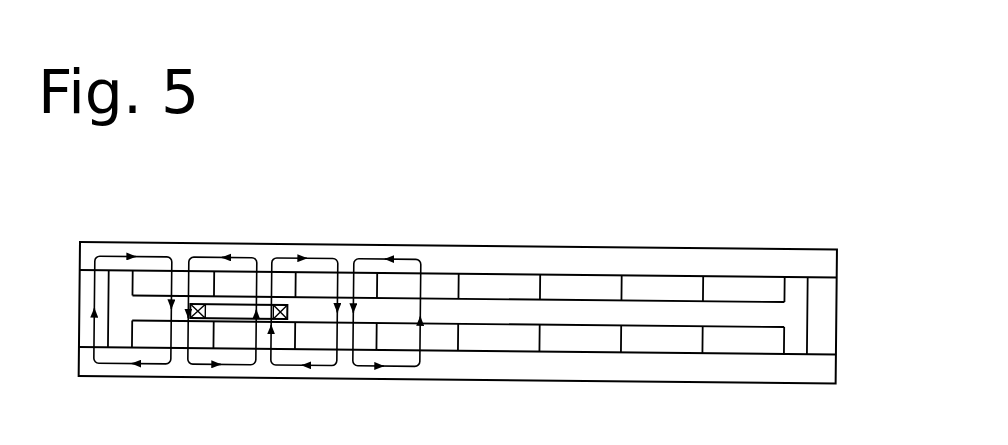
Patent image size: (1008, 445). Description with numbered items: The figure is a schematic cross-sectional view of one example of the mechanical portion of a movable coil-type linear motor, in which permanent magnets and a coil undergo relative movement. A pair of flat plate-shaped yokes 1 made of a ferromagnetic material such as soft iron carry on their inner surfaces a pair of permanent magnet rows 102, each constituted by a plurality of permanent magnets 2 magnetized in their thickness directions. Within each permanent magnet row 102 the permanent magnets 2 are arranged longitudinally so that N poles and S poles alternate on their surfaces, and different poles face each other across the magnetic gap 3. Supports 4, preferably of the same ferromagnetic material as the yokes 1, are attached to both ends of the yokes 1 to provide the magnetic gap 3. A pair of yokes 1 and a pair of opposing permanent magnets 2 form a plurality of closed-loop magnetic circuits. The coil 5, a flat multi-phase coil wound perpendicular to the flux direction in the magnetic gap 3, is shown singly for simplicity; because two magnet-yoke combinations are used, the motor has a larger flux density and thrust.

The yoke 1 is at (104, 243).
The permanent magnet 2 is at (200, 282).
The magnetic gap 3 is at (367, 312).
The support 4 is at (87, 298).
The coil 5 is at (280, 305).
The permanent magnet row 102 is at (795, 292).